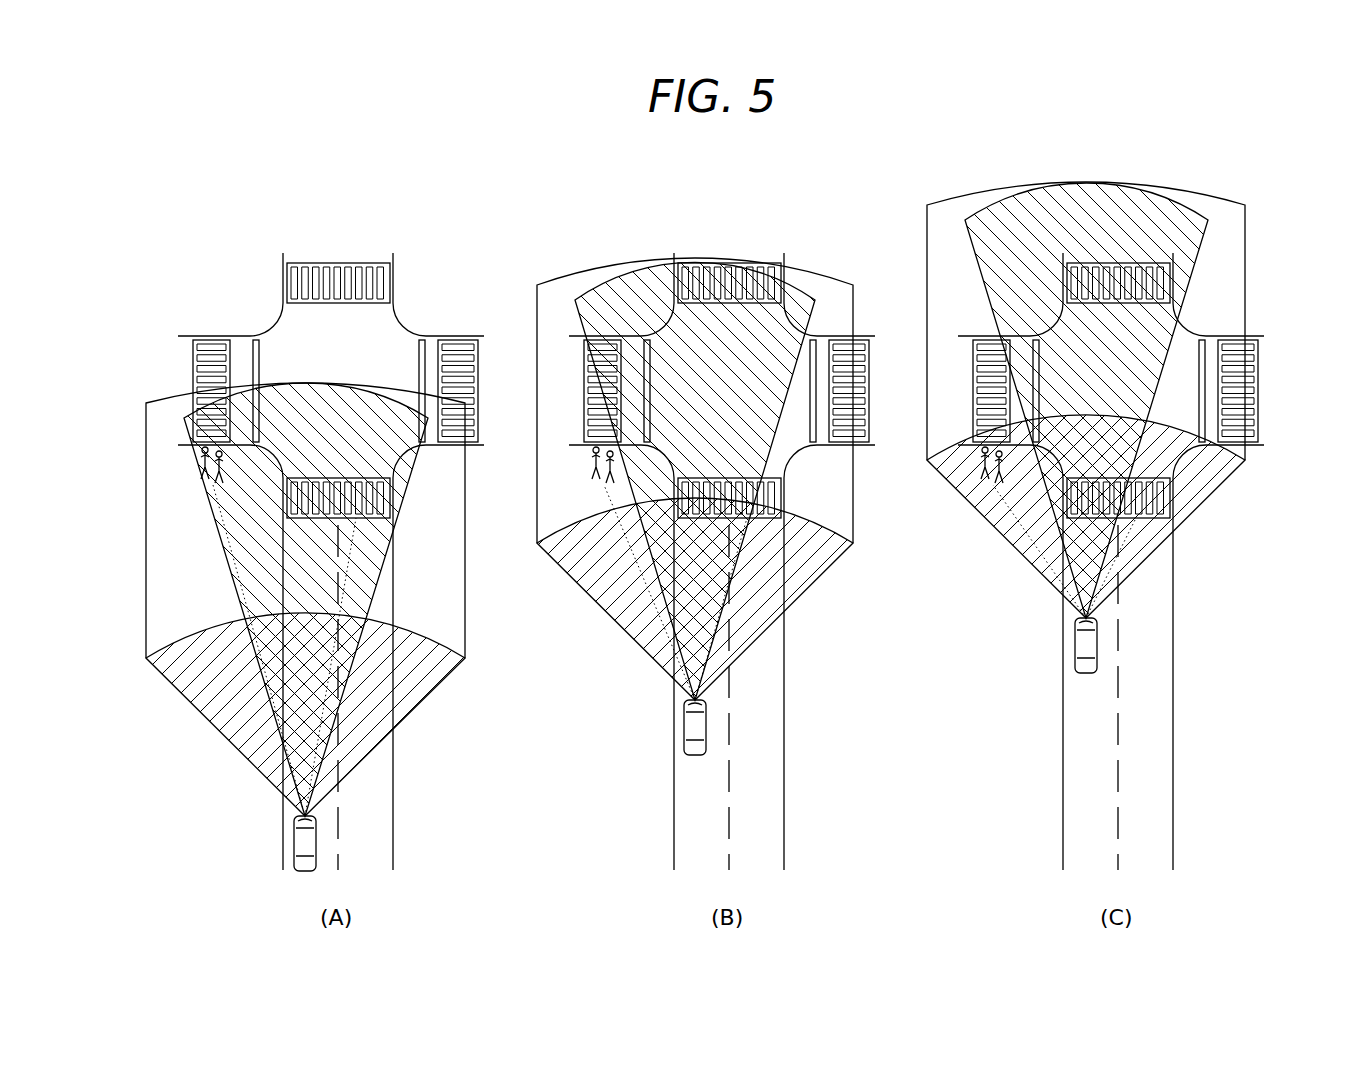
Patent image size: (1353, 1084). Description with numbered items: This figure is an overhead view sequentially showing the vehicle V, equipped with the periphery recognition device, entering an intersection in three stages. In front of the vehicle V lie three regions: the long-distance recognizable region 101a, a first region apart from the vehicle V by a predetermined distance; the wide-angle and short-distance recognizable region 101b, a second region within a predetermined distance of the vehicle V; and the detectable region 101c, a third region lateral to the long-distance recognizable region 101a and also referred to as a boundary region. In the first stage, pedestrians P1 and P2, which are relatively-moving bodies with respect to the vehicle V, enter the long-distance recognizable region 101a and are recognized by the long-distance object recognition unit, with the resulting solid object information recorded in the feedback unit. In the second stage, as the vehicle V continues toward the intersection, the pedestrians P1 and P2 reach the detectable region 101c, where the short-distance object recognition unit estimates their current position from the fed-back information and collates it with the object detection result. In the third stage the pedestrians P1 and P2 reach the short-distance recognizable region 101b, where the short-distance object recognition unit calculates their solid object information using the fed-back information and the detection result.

The long-distance recognizable region 101a is at (337, 427).
The wide-angle and short-distance recognizable region 101b is at (370, 695).
The detectable region 101c is at (175, 550).
The pedestrian P1 is at (207, 500).
The pedestrian P2 is at (200, 462).
The vehicle V is at (294, 843).